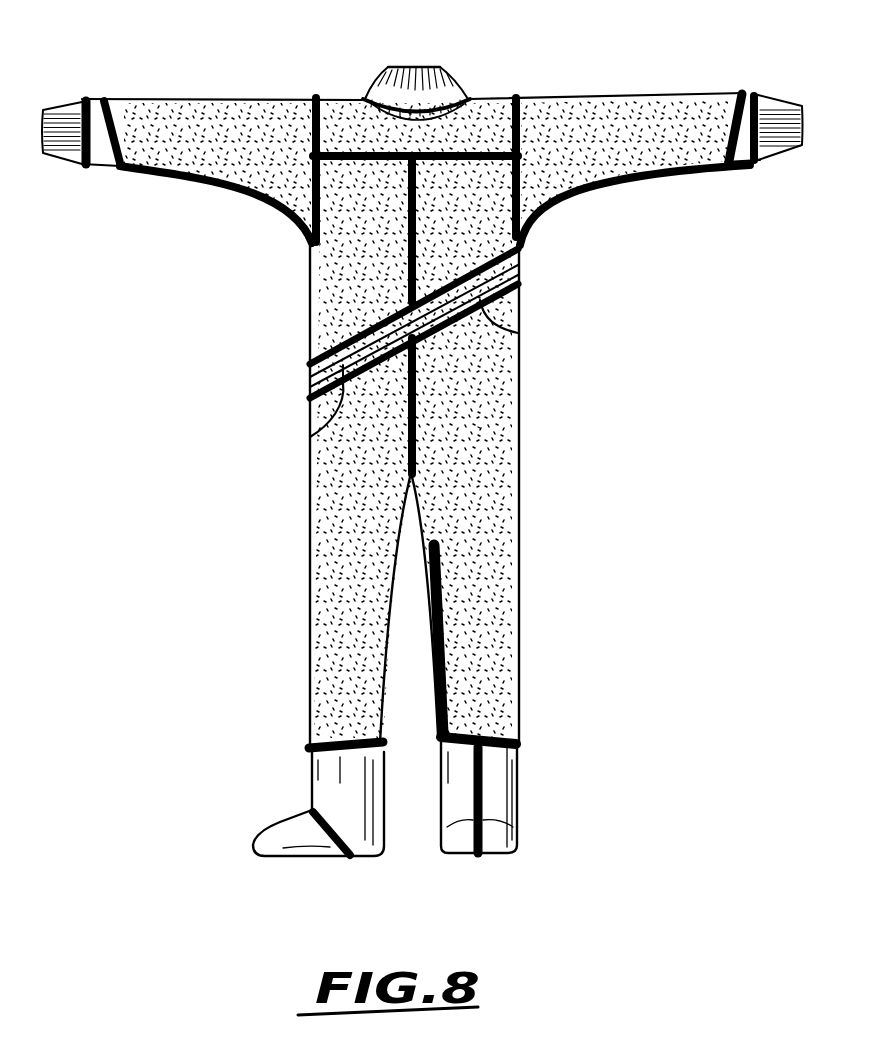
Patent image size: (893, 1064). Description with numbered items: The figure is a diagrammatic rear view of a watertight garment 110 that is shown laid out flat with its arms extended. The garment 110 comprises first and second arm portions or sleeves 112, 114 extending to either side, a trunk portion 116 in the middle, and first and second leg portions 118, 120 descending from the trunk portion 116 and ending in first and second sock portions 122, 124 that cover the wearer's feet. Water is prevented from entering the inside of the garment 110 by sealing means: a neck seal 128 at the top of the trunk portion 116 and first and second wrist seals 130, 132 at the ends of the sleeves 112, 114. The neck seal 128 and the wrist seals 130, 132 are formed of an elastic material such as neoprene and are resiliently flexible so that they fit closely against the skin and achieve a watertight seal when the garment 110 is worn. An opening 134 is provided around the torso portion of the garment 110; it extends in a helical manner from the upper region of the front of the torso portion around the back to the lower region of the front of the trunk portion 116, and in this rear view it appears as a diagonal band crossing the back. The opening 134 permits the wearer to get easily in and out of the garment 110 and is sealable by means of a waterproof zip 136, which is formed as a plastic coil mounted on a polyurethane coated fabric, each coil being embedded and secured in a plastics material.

The garment 110 is at (258, 322).
The first arm portion or sleeve 112 is at (597, 115).
The second arm portion or sleeve 114 is at (198, 115).
The trunk portion 116 is at (478, 427).
The first leg portion 118 is at (483, 605).
The second leg portion 120 is at (345, 614).
The first sock portion 122 is at (503, 818).
The second sock portion 124 is at (283, 848).
The neck seal 128 is at (433, 91).
The first wrist seal 130 is at (772, 125).
The second wrist seal 132 is at (67, 130).
The opening 134 is at (518, 333).
The waterproof zip 136 is at (310, 437).